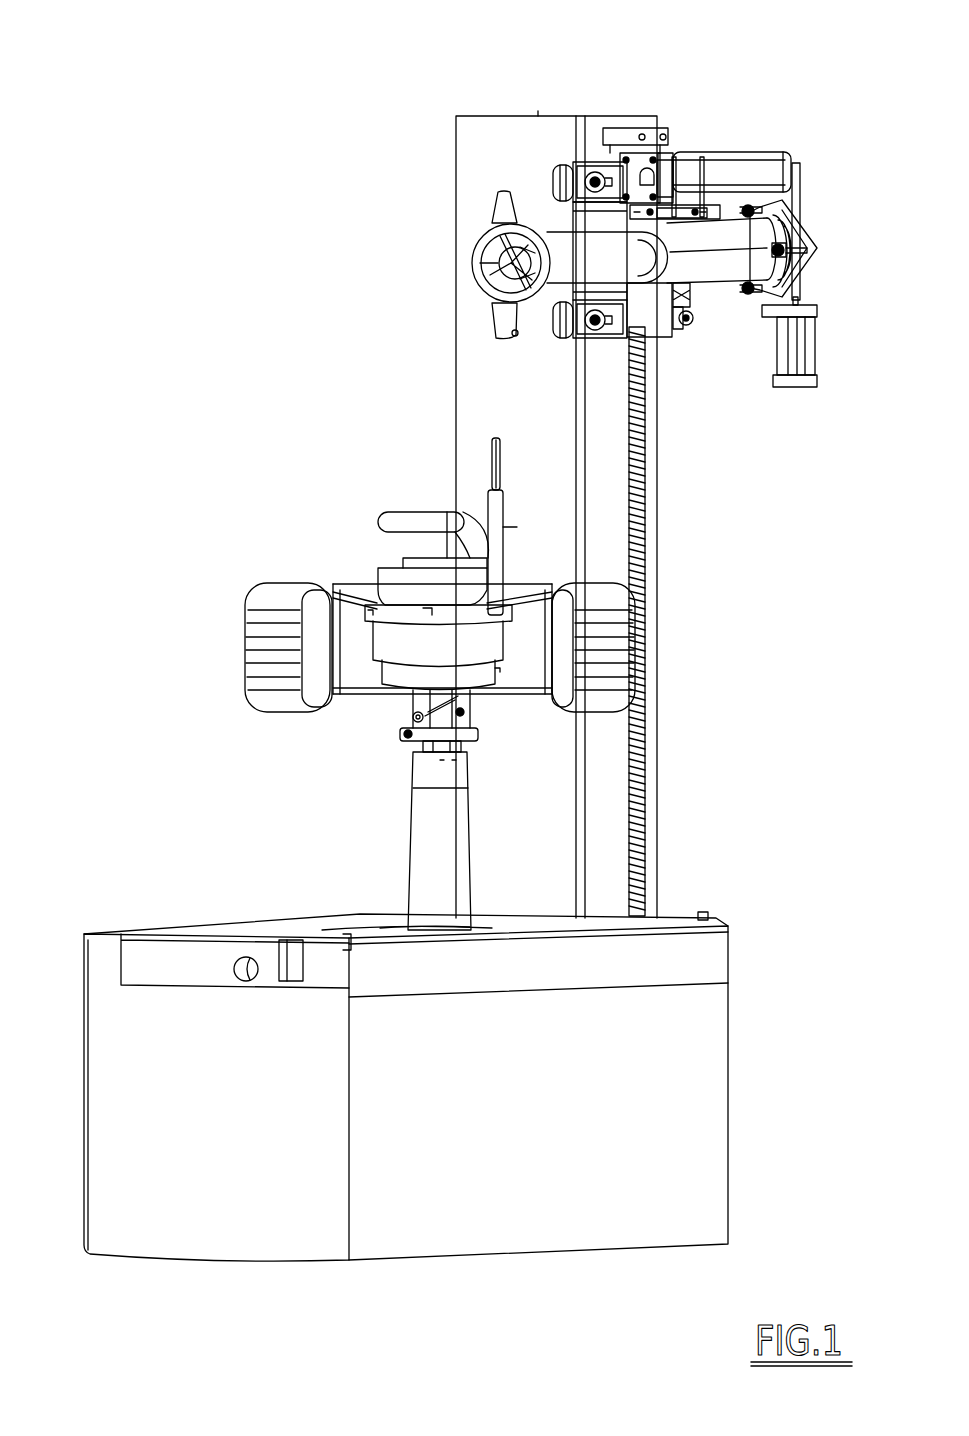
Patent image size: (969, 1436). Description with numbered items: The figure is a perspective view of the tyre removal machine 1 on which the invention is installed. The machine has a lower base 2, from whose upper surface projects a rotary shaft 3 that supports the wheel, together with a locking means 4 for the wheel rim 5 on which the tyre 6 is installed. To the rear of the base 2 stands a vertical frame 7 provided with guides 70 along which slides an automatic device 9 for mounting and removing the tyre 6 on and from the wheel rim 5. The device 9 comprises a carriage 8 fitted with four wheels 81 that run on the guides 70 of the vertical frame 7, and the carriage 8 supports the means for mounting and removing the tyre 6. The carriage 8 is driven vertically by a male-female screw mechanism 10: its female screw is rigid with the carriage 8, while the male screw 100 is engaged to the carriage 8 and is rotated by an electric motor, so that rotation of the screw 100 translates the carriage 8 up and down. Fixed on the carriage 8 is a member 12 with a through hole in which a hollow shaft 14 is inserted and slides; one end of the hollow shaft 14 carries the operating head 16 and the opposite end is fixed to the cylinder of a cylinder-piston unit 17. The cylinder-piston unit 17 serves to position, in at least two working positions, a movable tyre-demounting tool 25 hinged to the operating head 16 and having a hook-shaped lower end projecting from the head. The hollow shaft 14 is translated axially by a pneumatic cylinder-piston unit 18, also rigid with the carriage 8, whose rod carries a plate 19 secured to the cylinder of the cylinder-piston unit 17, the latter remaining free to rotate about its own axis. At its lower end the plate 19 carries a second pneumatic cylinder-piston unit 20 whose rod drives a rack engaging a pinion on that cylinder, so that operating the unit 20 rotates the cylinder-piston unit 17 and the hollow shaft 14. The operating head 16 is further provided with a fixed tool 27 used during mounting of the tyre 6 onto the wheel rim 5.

The tyre removal machine 1 is at (150, 327).
The lower base 2 is at (143, 1222).
The rotary shaft 3 is at (418, 876).
The locking means 4 is at (372, 706).
The wheel rim 5 is at (345, 637).
The tyre 6 is at (245, 662).
The vertical frame 7 is at (527, 128).
The carriage 8 is at (622, 178).
The automatic device 9 is at (762, 128).
The male-female screw mechanism 10 is at (718, 621).
The member 12 is at (722, 268).
The hollow shaft 14 is at (565, 245).
The operating head 16 is at (473, 264).
The cylinder-piston unit 17 is at (820, 250).
The pneumatic cylinder-piston unit 18 is at (730, 172).
The plate 19 is at (800, 200).
The second pneumatic cylinder-piston unit 20 is at (822, 357).
The movable tyre-demounting tool 25 is at (495, 322).
The fixed tool 27 is at (495, 206).
The guides 70 is at (576, 436).
The wheels 81 is at (555, 178).
The male screw 100 is at (648, 795).